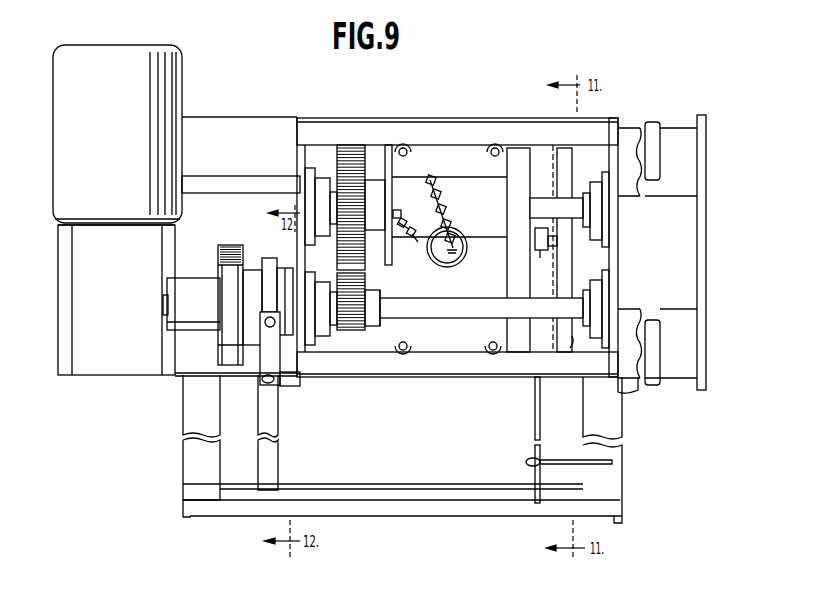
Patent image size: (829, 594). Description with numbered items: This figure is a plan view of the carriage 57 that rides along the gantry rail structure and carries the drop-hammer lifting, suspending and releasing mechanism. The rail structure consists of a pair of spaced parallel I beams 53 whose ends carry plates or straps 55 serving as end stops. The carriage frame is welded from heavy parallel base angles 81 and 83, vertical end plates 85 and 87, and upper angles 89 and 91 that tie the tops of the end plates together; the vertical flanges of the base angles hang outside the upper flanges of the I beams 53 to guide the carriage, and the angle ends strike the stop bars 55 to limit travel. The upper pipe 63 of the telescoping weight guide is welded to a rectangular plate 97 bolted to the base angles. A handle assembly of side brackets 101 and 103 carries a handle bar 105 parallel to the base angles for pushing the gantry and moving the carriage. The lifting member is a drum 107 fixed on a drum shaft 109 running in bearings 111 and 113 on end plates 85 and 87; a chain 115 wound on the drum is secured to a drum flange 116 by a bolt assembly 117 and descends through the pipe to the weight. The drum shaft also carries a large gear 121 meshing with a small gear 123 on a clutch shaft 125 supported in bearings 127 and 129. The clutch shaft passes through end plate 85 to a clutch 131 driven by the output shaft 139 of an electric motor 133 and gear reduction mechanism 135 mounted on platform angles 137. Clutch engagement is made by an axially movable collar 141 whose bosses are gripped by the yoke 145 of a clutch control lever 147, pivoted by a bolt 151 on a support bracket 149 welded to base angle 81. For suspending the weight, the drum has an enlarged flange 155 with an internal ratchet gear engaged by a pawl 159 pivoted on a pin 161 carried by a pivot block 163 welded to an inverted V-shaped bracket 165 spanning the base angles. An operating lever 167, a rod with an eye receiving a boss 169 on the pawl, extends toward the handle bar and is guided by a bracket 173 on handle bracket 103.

The I beams 53 is at (688, 172).
The plates or straps 55 is at (700, 262).
The carriage 57 is at (452, 118).
The upper pipe 63 is at (460, 258).
The base angle 81 is at (626, 383).
The base angle 83 is at (278, 128).
The vertical end plate 85 is at (300, 170).
The vertical end plate 87 is at (614, 253).
The upper angle 89 is at (460, 374).
The upper angle 91 is at (514, 130).
The rectangular plate 97 is at (393, 330).
The side bracket 101 is at (185, 412).
The side bracket 103 is at (620, 481).
The handle bar 105 is at (385, 488).
The drum 107 is at (482, 186).
The drum shaft 109 is at (575, 208).
The bearing 111 is at (305, 198).
The bearing 113 is at (605, 228).
The chain 115 is at (446, 206).
The drum flange 116 is at (392, 182).
The bolt assembly 117 is at (400, 217).
The large gear 121 is at (355, 146).
The small gear 123 is at (360, 290).
The clutch shaft 125 is at (470, 308).
The bearing 127 is at (322, 345).
The bearing 129 is at (598, 300).
The clutch 131 is at (228, 330).
The electric motor 133 is at (178, 70).
The gear reduction mechanism 135 is at (60, 318).
The angles 137 is at (60, 228).
The output shaft 139 is at (165, 300).
The axially movable collar 141 is at (268, 262).
The yoke 145 is at (262, 370).
The clutch control lever 147 is at (275, 462).
The support bracket 149 is at (292, 380).
The bolt 151 is at (272, 385).
The enlarged flange 155 is at (526, 160).
The pawl 159 is at (525, 255).
The pin 161 is at (557, 240).
The pivot block 163 is at (540, 235).
The inverted V-shaped bracket 165 is at (570, 340).
The operating lever 167 is at (535, 428).
The boss 169 is at (548, 250).
The bracket 173 is at (555, 461).